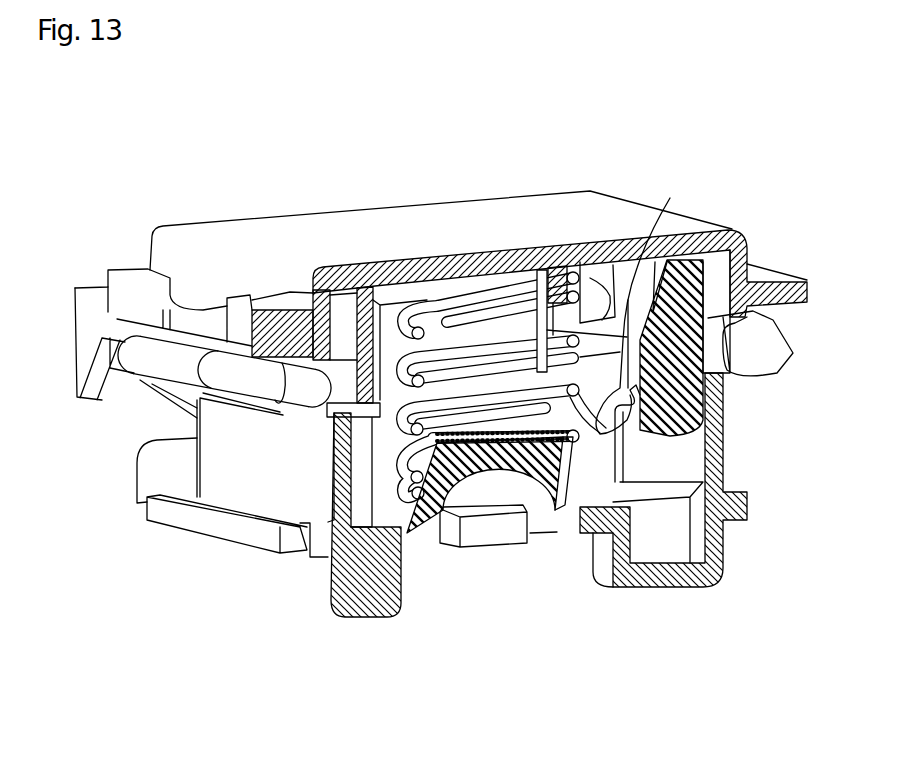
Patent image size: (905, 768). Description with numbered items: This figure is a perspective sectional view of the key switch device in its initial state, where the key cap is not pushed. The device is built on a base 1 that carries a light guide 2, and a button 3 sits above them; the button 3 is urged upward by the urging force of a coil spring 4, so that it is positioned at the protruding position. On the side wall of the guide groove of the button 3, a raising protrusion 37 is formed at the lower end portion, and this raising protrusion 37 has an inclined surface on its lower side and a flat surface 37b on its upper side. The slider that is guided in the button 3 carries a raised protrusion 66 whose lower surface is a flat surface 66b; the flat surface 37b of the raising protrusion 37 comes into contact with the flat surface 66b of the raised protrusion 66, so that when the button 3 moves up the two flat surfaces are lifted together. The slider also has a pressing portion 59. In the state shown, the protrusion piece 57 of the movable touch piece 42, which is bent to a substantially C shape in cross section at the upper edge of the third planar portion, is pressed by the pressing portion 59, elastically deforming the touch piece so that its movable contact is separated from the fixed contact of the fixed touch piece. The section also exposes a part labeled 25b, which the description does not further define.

The base 1 is at (283, 473).
The light guide 2 is at (420, 543).
The button 3 is at (407, 222).
The coil spring 4 is at (373, 292).
The support block 25b is at (493, 532).
The raising protrusion 37 is at (541, 366).
The flat surface 37b is at (565, 300).
The movable touch piece 42 is at (593, 467).
The protrusion piece 57 is at (645, 432).
The pressing portion 59 is at (720, 428).
The raised protrusion 66 is at (590, 278).
The flat surface 66b is at (672, 198).